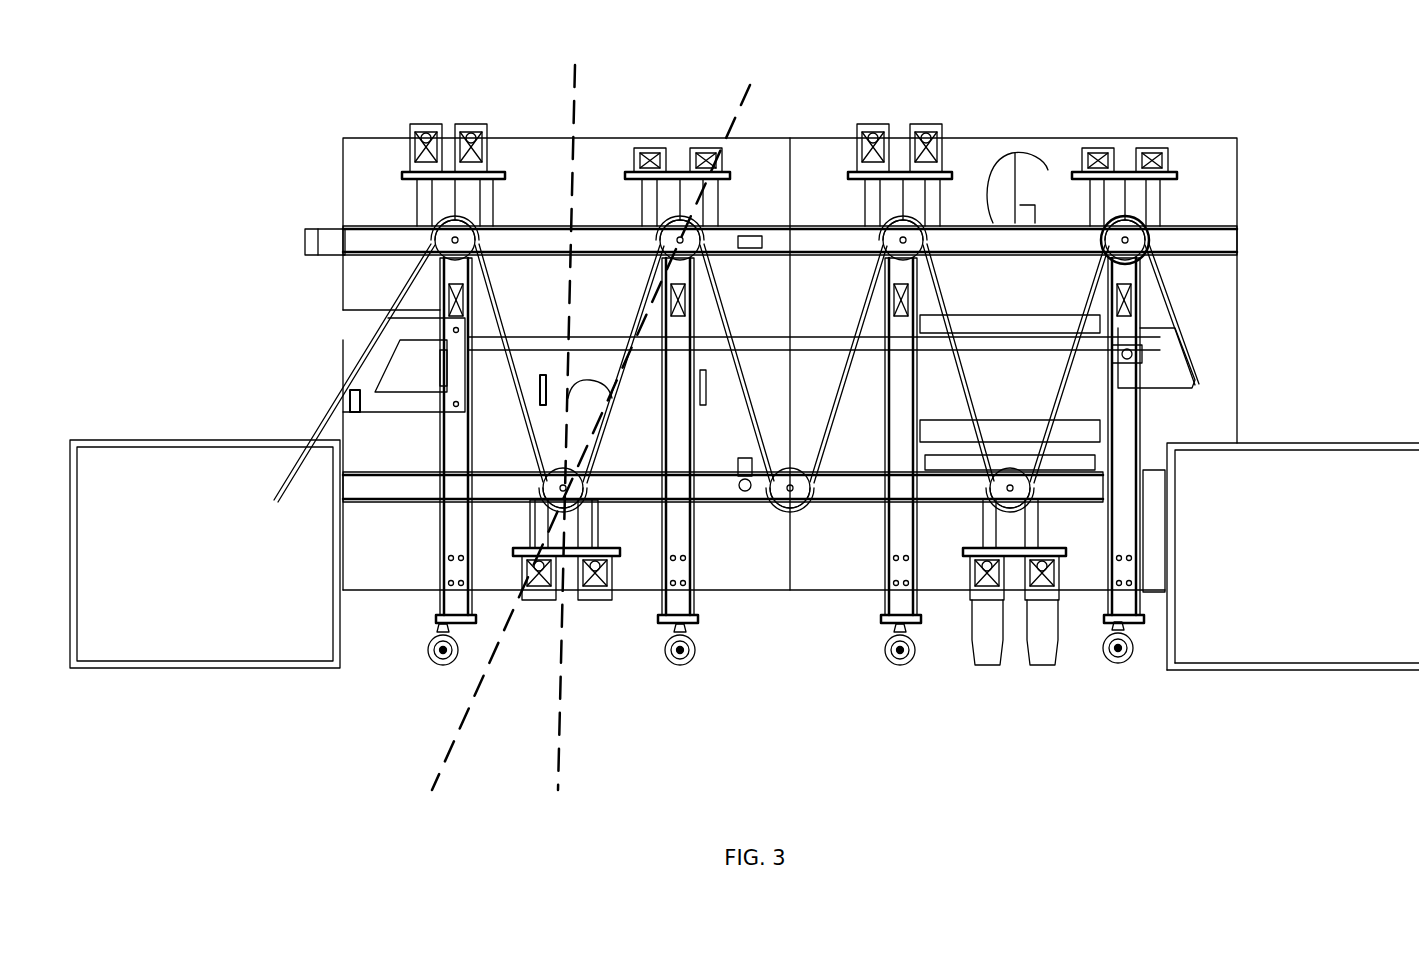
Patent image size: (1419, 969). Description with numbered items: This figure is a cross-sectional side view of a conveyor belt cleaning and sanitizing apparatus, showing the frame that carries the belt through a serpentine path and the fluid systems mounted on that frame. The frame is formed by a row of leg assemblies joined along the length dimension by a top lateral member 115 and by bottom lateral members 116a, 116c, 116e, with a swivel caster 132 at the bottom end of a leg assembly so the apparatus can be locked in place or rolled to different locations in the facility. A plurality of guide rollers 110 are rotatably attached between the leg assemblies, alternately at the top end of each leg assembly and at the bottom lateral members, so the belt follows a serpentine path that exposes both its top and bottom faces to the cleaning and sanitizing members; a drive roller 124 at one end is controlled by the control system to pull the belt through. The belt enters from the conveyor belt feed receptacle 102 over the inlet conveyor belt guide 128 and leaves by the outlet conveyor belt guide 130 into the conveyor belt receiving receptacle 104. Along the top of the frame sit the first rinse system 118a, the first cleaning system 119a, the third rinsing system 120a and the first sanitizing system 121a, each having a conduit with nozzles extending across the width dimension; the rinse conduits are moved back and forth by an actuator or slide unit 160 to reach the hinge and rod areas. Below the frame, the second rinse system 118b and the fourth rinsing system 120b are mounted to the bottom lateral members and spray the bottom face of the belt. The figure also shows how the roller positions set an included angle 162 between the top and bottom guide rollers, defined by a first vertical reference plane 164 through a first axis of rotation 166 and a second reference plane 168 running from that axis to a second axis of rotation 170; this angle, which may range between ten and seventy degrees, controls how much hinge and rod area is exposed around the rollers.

The conveyor belt feed receptacle 102 is at (135, 622).
The conveyor belt receiving receptacle 104 is at (1390, 625).
The guide roller 110 is at (440, 242).
The top lateral member 115 is at (525, 245).
The bottom lateral member 116a is at (642, 492).
The bottom lateral member 116c is at (745, 492).
The bottom lateral member 116e is at (930, 492).
The first rinse system 118a is at (415, 163).
The second rinse system 118b is at (523, 600).
The first cleaning system 119a is at (700, 170).
The third rinsing system 120a is at (935, 165).
The fourth rinsing system 120b is at (1040, 595).
The first sanitizing system 121a is at (1160, 152).
The drive roller 124 is at (1138, 238).
The inlet conveyor belt guide 128 is at (365, 385).
The outlet conveyor belt guide 130 is at (1160, 357).
The swivel caster 132 is at (440, 650).
The actuator or slide unit 160 is at (470, 150).
The included angle 162 is at (590, 380).
The first vertical reference plane 164 is at (578, 415).
The first axis of rotation 166 is at (590, 492).
The second reference plane 168 is at (603, 418).
The second axis of rotation 170 is at (672, 238).